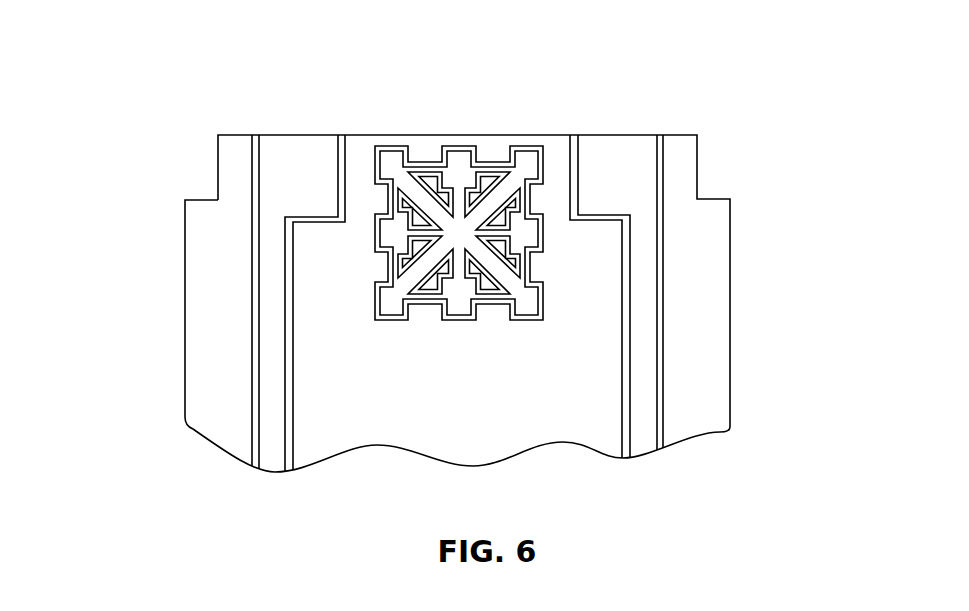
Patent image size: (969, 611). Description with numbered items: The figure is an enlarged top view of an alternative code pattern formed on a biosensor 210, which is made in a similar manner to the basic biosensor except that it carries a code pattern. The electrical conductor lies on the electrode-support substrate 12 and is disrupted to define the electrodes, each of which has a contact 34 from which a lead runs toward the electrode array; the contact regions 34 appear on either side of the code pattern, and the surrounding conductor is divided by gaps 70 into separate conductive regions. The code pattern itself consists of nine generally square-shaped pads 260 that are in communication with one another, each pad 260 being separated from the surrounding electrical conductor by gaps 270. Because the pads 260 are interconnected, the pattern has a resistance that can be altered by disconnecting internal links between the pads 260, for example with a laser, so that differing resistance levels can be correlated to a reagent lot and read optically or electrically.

The electrode-support substrate 12 is at (750, 339).
The contact 34 is at (298, 152).
The conductive trace 70 is at (287, 389).
The biosensor 210 is at (166, 341).
The pad 260 is at (462, 160).
The gap 270 is at (388, 148).